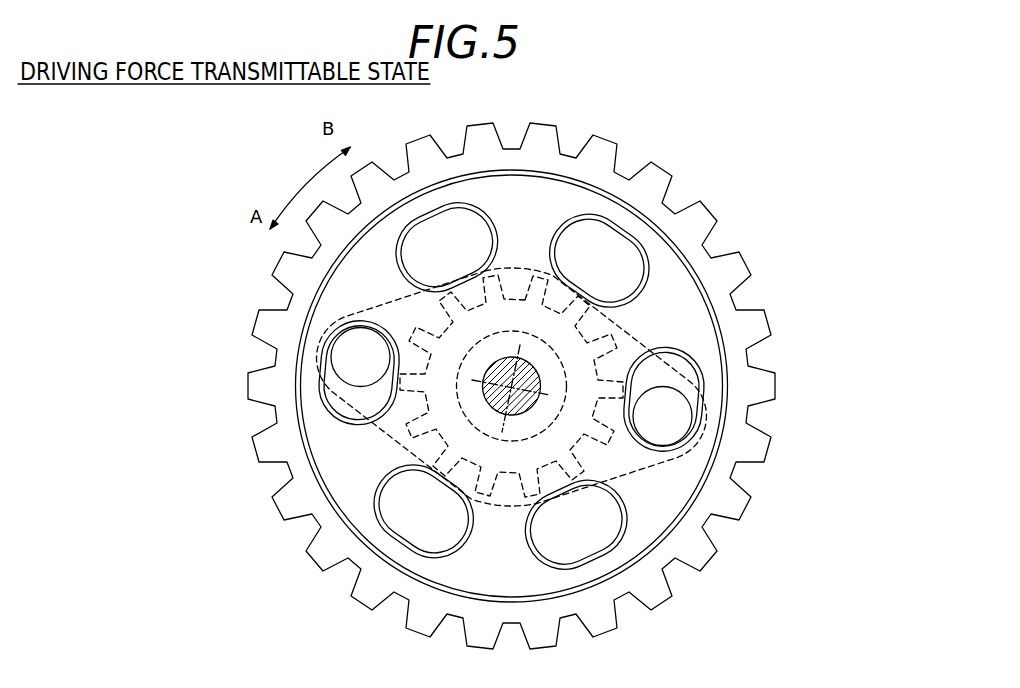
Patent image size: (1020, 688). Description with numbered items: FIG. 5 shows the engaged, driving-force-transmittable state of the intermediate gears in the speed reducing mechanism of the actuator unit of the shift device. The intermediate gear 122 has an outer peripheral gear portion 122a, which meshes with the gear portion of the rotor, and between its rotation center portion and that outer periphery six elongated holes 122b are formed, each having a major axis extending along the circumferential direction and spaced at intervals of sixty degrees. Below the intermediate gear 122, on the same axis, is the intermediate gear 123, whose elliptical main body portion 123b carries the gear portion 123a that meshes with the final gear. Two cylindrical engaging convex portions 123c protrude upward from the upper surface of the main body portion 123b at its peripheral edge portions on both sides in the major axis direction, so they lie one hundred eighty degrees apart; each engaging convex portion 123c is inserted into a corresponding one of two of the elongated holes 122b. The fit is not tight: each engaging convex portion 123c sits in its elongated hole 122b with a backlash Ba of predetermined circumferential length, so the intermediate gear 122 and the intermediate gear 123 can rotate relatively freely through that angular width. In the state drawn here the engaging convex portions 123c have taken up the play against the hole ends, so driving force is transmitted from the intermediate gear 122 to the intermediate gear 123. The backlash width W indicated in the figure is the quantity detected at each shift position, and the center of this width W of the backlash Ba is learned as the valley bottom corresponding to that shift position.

The intermediate gear 122 is at (682, 204).
The gear portion 122a is at (712, 222).
The elongated holes 122b is at (433, 228).
The intermediate gear 123 is at (513, 252).
The gear portion 123a is at (536, 285).
The main body portion 123b is at (633, 330).
The engaging convex portions 123c is at (352, 350).
The backlash Ba is at (328, 402).
The backlash width W is at (354, 393).